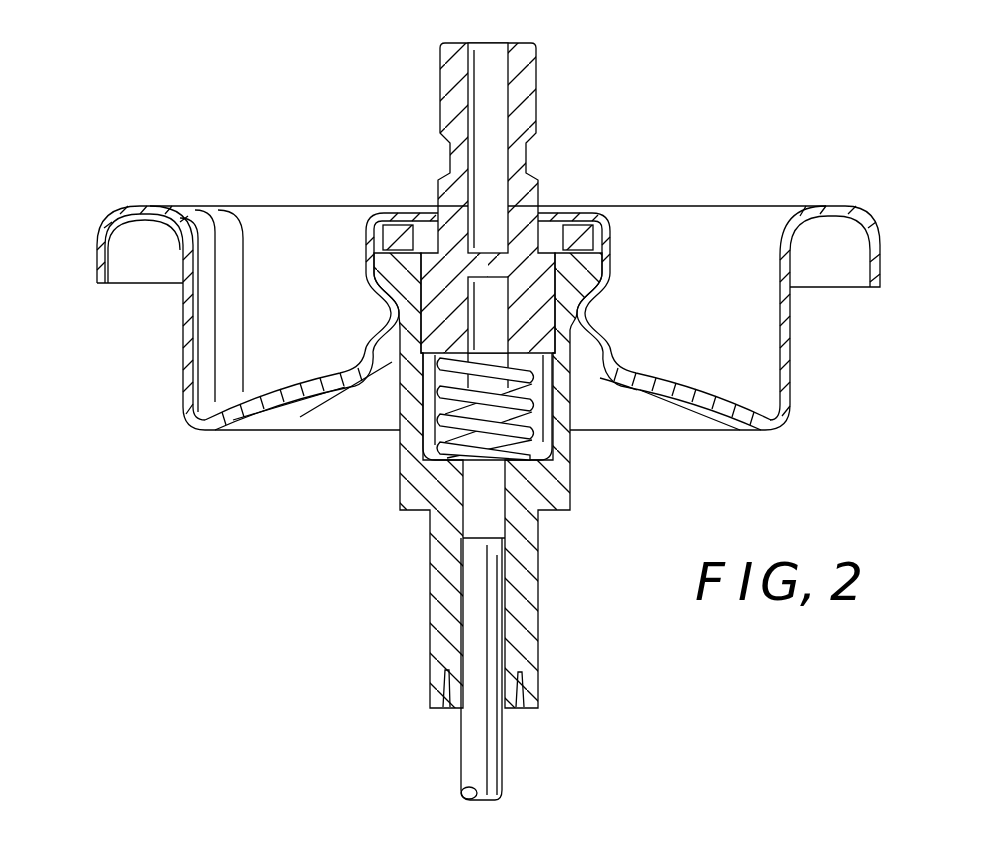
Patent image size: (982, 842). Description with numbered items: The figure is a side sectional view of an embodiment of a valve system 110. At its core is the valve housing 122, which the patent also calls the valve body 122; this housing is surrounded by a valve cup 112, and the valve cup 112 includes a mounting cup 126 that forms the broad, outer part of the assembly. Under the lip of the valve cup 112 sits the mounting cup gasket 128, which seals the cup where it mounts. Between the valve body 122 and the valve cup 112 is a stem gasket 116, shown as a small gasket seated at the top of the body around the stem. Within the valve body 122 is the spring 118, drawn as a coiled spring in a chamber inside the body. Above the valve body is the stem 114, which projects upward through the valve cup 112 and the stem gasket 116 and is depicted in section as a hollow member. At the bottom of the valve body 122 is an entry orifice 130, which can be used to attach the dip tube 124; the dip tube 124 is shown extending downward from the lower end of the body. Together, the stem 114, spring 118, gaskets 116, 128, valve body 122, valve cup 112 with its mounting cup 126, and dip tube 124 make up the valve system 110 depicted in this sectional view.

The valve system 110 is at (718, 142).
The valve cup 112 is at (160, 336).
The stem 114 is at (452, 105).
The stem gasket 116 is at (570, 238).
The spring 118 is at (552, 448).
The valve housing 122 is at (420, 512).
The dip tube 124 is at (490, 748).
The mounting cup 126 is at (203, 430).
The mounting cup gasket 128 is at (143, 204).
The entry orifice 130 is at (538, 693).